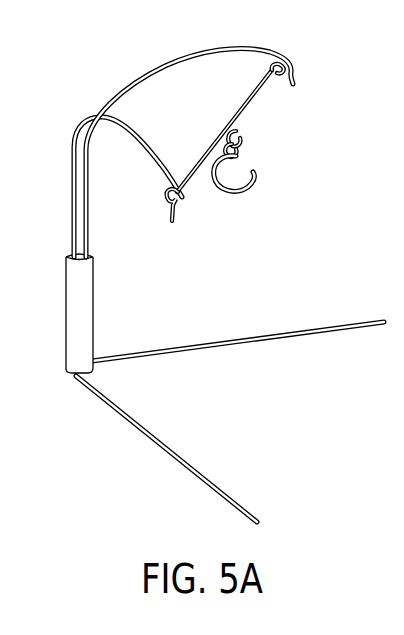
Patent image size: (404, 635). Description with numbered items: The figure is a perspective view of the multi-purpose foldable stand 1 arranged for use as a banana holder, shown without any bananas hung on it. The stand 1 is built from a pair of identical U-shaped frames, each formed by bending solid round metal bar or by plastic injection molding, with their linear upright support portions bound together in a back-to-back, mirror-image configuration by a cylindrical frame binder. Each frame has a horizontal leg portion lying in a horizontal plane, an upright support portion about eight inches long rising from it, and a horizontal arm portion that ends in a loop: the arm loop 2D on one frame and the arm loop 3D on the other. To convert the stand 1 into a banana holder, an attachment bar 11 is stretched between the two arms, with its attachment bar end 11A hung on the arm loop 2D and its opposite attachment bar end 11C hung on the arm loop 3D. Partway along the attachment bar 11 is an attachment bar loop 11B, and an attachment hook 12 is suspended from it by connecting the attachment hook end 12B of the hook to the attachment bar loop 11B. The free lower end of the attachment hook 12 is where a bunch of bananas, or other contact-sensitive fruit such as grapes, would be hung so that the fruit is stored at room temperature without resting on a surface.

The multi-purpose foldable stand 1 is at (93, 79).
The arm loop 2D is at (187, 203).
The arm loop 3D is at (293, 58).
The attachment bar 11 is at (223, 108).
The attachment bar end 11A is at (180, 214).
The attachment bar loop 11B is at (240, 138).
The attachment bar end 11C is at (294, 74).
The attachment hook 12 is at (267, 188).
The attachment hook end 12B is at (238, 154).